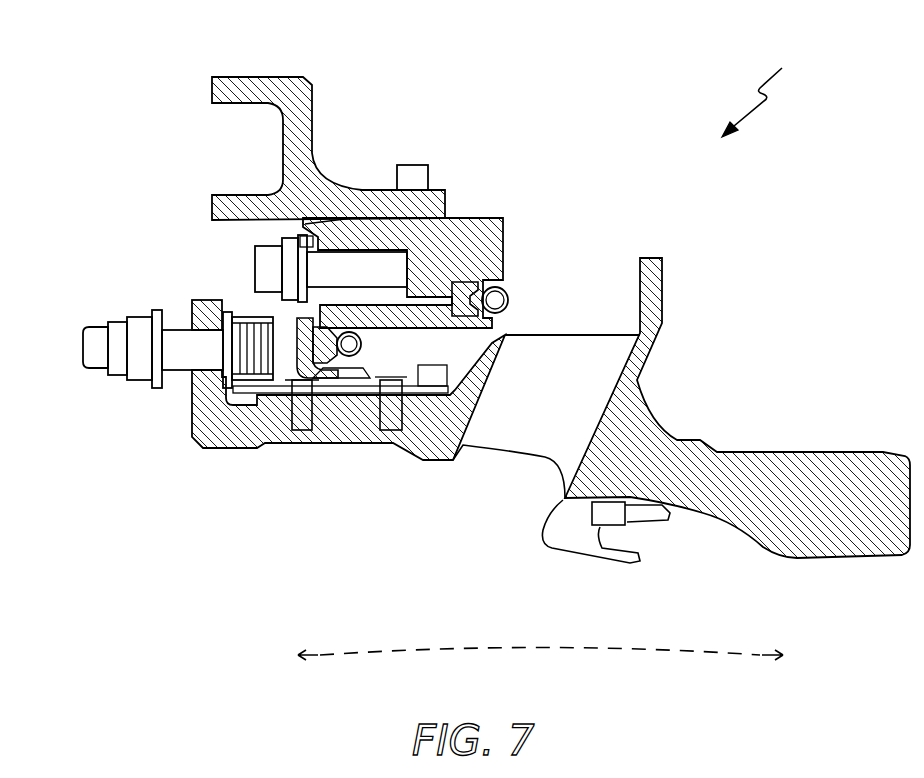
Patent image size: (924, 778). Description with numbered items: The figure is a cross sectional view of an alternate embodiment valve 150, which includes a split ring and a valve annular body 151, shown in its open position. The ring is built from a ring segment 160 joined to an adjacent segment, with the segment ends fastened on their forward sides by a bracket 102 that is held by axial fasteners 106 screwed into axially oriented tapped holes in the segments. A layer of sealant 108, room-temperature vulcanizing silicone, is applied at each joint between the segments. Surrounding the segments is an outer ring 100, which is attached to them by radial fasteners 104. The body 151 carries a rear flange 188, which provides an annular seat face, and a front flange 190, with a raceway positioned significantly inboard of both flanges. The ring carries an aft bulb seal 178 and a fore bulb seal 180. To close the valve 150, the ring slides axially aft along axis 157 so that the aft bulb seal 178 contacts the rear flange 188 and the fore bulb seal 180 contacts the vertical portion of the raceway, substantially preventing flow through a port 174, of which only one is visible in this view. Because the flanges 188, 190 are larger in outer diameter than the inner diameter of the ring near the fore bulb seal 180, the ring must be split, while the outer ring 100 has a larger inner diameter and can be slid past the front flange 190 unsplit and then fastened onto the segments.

The outer ring 100 is at (362, 190).
The bracket 102 is at (300, 232).
The radial fastener 104 is at (430, 172).
The axial fastener 106 is at (255, 262).
The sealant 108 is at (343, 297).
The alternate embodiment valve 150 is at (764, 91).
The valve annular body 151 is at (731, 452).
The axis 157 is at (562, 647).
The ring segment 160 is at (505, 244).
The port 174 is at (598, 418).
The aft bulb seal 178 is at (510, 300).
The fore bulb seal 180 is at (363, 343).
The rear flange 188 is at (650, 258).
The front flange 190 is at (206, 300).